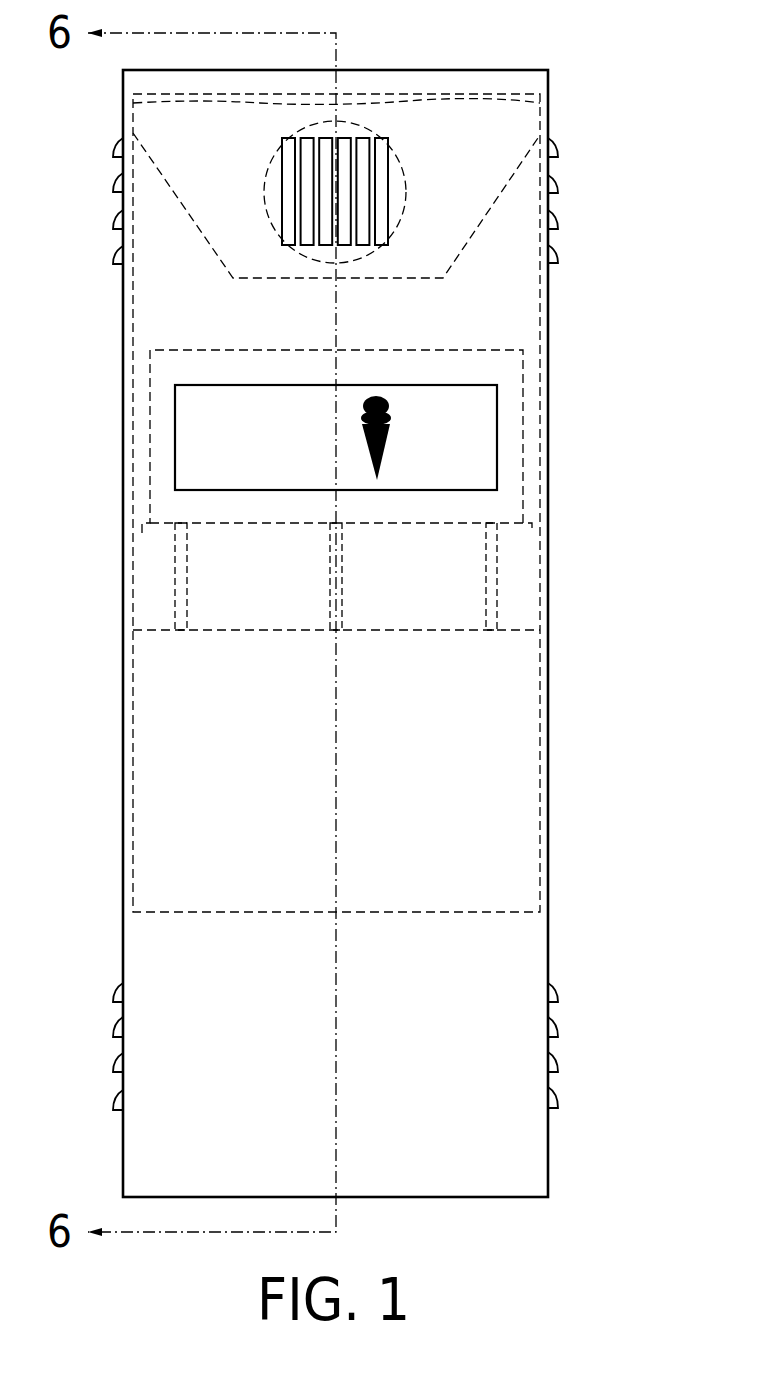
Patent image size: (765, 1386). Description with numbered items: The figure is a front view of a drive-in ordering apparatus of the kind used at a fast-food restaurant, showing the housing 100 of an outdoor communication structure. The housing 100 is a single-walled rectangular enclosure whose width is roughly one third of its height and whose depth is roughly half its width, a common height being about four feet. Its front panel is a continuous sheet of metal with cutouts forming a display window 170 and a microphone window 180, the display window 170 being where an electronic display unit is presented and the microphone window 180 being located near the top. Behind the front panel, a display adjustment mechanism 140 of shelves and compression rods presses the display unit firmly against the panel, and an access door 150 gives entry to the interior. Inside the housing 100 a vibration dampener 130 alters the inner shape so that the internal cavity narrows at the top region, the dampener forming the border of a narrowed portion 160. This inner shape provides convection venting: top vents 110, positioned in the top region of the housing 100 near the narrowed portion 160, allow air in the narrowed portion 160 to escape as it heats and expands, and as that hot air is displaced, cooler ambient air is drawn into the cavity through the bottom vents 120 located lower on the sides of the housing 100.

The housing 100 is at (366, 14).
The top vents 110 is at (120, 182).
The bottom vents 120 is at (115, 1027).
The vibration dampener 130 is at (408, 280).
The display adjustment mechanism 140 is at (420, 655).
The access door 150 is at (185, 912).
The narrowed portion 160 is at (166, 268).
The display window 170 is at (175, 440).
The microphone window 180 is at (390, 192).